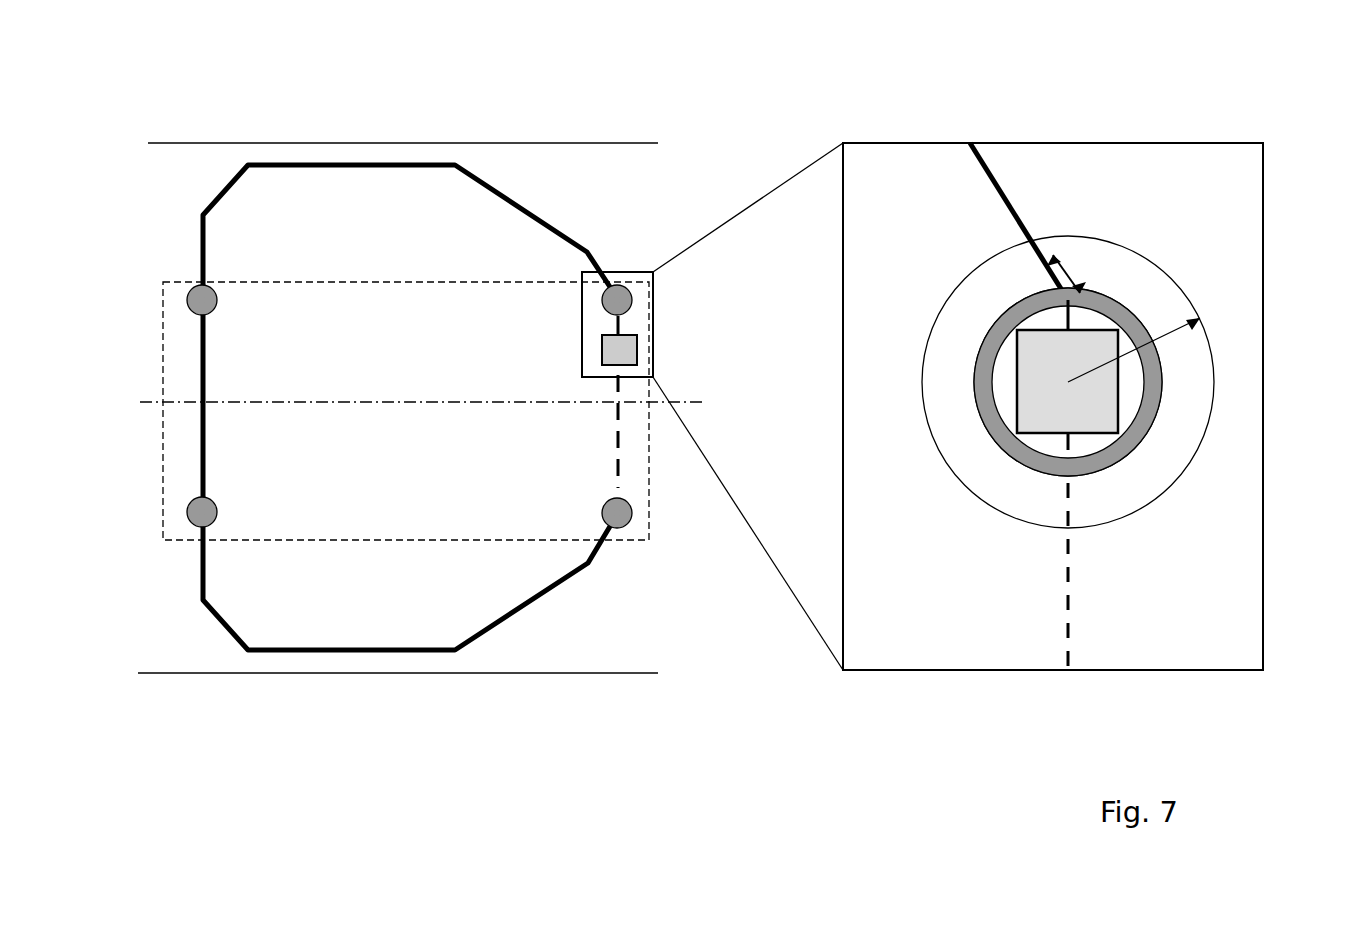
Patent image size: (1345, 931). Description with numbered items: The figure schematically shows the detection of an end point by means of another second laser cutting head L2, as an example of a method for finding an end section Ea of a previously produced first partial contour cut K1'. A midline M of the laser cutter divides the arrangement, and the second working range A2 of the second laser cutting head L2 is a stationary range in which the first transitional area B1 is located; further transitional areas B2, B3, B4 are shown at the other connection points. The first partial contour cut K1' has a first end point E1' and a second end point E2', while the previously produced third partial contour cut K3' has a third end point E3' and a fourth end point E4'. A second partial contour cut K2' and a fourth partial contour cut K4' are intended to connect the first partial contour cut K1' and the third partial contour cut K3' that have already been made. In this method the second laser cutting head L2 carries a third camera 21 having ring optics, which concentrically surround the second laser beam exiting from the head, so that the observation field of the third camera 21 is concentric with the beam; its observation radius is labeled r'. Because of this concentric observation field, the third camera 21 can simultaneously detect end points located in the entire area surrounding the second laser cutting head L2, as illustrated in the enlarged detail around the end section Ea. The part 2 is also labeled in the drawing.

The machine / tube 2 is at (202, 177).
The previously produced first partial contour cut K1' is at (635, 184).
The second partial contour cut K2' is at (149, 406).
The previously produced third partial contour cut K3' is at (407, 621).
The fourth partial contour cut K4' is at (904, 485).
The first end point E1' is at (160, 259).
The second end point E2' is at (882, 324).
The third end point E3' is at (162, 556).
The fourth end point E4' is at (663, 562).
The first transitional area B1 is at (602, 307).
The second transitional area B2 is at (607, 507).
The third transitional area B3 is at (217, 303).
The fourth transitional area B4 is at (215, 508).
The second laser cutting head L2 is at (622, 350).
The midline M is at (148, 404).
The second working range A2 is at (385, 540).
The end section Ea is at (1065, 268).
The third camera 21 is at (1123, 323).
The observation radius r' is at (1189, 362).